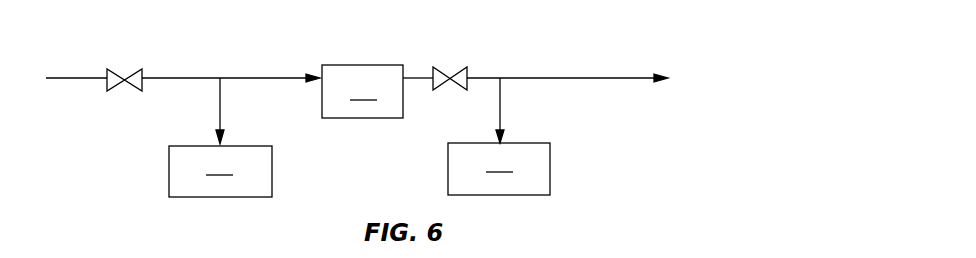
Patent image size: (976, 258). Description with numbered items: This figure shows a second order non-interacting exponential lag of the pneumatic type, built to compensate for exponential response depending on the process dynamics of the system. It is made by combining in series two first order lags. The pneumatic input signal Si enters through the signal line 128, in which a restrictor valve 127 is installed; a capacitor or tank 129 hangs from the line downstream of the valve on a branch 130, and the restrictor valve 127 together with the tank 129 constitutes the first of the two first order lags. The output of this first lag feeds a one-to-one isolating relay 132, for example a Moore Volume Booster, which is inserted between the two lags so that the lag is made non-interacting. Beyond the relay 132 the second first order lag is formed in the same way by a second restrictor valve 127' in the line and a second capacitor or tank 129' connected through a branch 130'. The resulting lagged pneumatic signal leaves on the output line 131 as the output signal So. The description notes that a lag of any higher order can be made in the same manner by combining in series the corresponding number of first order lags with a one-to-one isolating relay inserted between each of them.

The restrictor valve 127 is at (136, 65).
The restrictor valve 127' is at (463, 63).
The signal line 128 is at (75, 79).
The capacitor or tank 129 is at (220, 171).
The capacitor or tank 129' is at (499, 169).
The branch line 130 is at (245, 111).
The branch line 130' is at (527, 110).
The output line 131 is at (598, 77).
The isolating relay 132 is at (362, 91).
The input signal Si is at (62, 78).
The output signal So is at (650, 77).